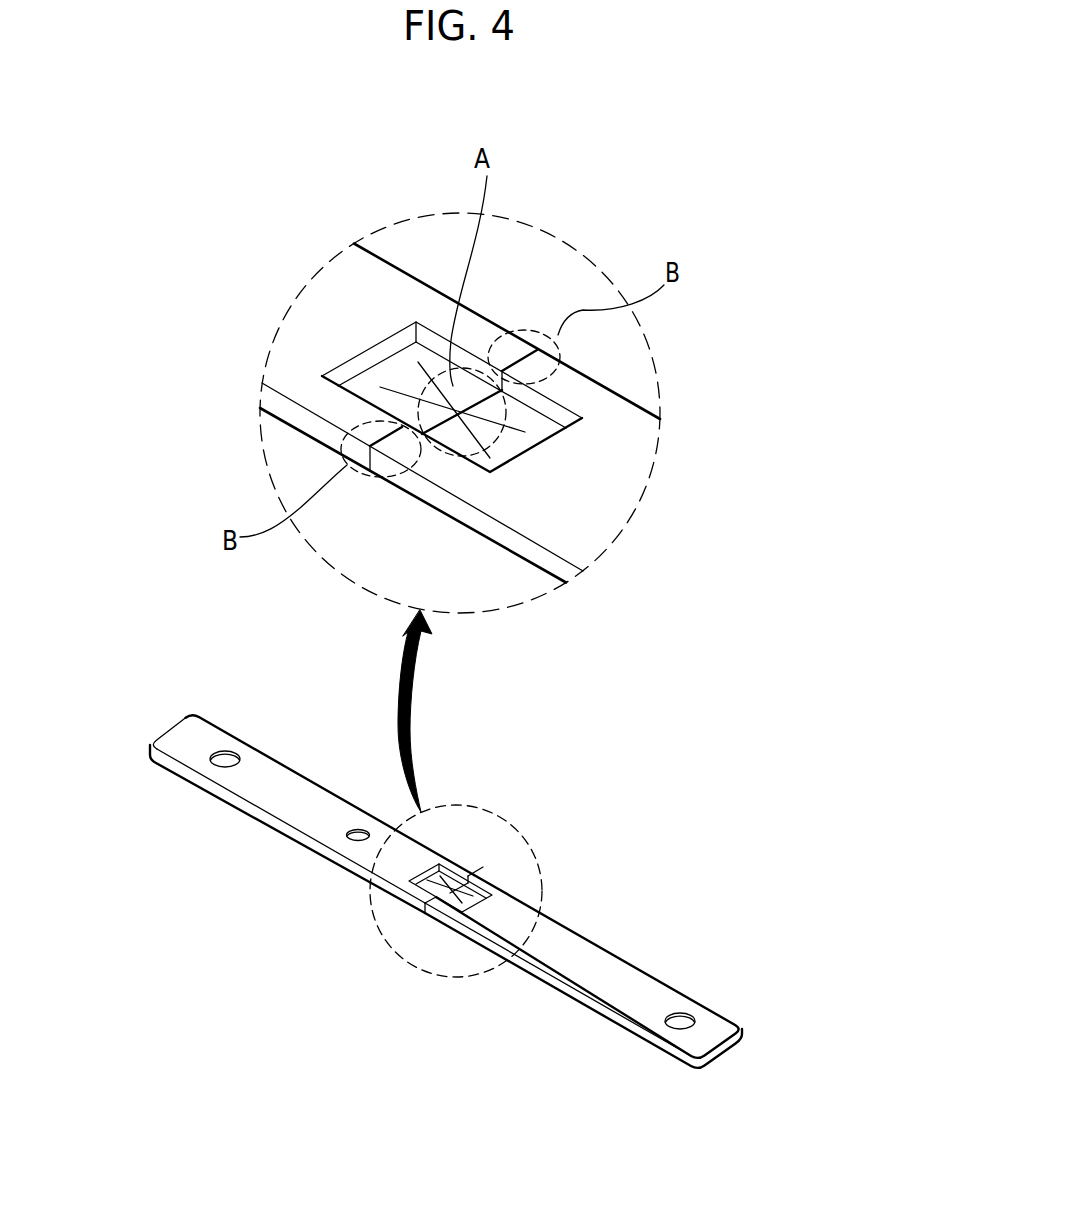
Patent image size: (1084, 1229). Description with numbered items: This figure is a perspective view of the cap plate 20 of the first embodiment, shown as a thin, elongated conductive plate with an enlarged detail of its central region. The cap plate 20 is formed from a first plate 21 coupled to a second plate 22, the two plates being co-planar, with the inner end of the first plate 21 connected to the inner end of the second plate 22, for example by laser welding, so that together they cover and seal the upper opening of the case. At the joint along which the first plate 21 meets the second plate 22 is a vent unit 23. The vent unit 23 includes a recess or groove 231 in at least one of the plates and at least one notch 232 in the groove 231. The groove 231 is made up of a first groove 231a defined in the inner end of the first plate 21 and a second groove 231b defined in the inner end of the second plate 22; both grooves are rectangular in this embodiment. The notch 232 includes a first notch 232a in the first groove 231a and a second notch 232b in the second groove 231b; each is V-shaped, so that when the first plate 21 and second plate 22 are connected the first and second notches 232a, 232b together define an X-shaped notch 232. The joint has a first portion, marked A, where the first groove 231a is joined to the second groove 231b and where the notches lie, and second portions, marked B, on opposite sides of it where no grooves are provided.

The cap plate 20 is at (425, 926).
The first plate 21 is at (292, 810).
The second plate 22 is at (593, 985).
The vent unit 23 is at (481, 886).
The groove 231 is at (790, 158).
The first groove 231a is at (362, 387).
The second groove 231b is at (542, 431).
The notch 232 is at (790, 241).
The first notch 232a is at (428, 378).
The second notch 232b is at (484, 447).